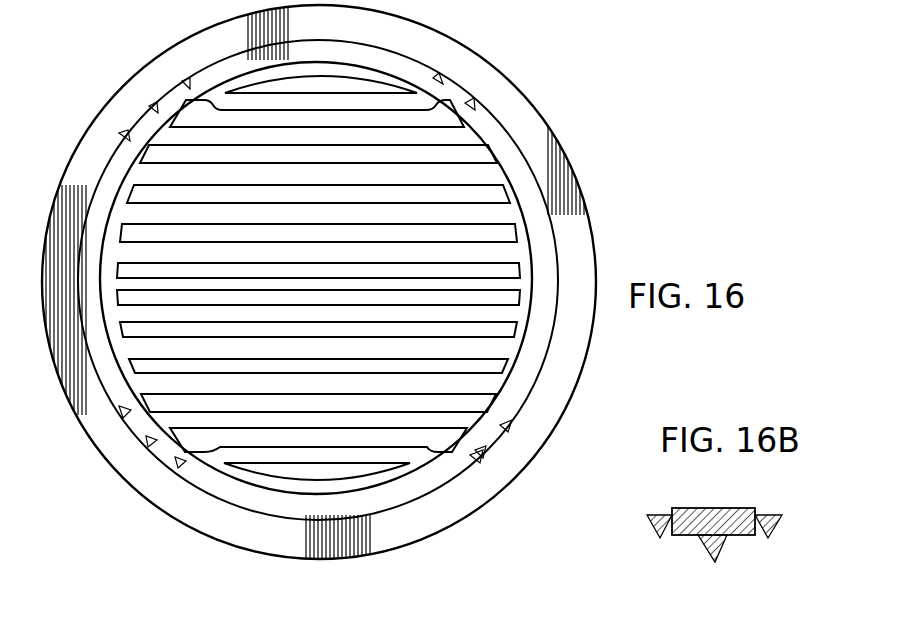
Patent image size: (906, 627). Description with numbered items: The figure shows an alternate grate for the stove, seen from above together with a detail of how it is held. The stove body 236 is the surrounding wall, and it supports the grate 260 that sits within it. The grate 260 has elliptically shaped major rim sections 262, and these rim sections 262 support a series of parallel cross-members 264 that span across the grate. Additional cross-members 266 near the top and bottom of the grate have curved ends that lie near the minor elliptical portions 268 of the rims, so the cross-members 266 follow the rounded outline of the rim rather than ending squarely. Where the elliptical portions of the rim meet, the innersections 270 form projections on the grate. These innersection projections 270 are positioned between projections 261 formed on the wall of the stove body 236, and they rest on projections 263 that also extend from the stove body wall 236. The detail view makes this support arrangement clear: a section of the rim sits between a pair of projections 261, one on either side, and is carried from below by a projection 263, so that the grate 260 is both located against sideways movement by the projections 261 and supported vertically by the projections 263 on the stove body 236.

In FIG. 16, the stove body 236 is at (501, 95).
In FIG. 16, the grate 260 is at (503, 182).
In FIG. 16B, the grate 260 is at (717, 514).
In FIG. 16, the projections 261 is at (186, 85).
In FIG. 16B, the projections 261 is at (662, 518).
In FIG. 16, the major rim sections 262 is at (517, 232).
In FIG. 16, the projections 263 is at (480, 456).
In FIG. 16B, the projections 263 is at (710, 548).
In FIG. 16, the cross-members 264 is at (490, 283).
In FIG. 16, the cross-members 266 is at (318, 101).
In FIG. 16, the minor elliptical portions 268 is at (236, 82).
In FIG. 16, the innersections 270 is at (148, 447).